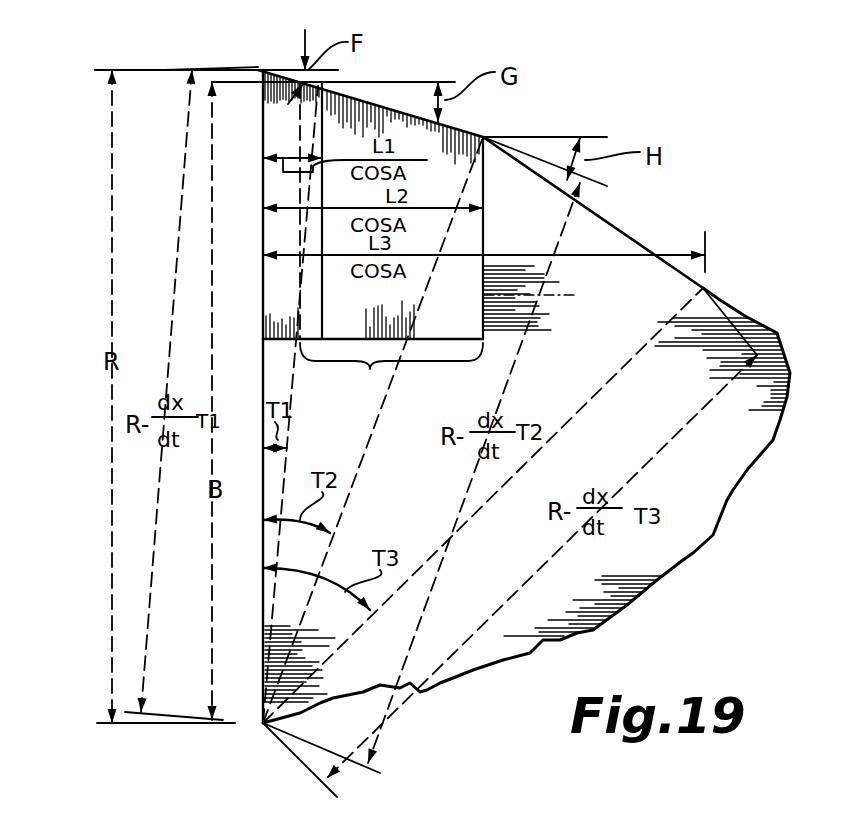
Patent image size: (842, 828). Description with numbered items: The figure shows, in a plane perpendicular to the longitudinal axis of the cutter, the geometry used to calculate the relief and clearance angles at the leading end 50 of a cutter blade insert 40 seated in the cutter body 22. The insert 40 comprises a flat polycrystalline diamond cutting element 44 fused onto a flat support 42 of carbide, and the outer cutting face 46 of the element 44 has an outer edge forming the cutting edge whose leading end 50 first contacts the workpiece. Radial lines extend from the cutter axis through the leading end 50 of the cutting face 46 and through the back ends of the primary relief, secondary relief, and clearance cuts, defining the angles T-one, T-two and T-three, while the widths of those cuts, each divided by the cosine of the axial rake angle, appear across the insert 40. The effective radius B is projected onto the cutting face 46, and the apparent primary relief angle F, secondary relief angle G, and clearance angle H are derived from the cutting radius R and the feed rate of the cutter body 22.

The cutter body 22 is at (722, 493).
The cutter blade insert 40 is at (486, 226).
The flat support 42 is at (370, 365).
The polycrystalline diamond cutting element 44 is at (280, 345).
The outer cutting face 46 is at (263, 176).
The leading end 50 is at (255, 68).